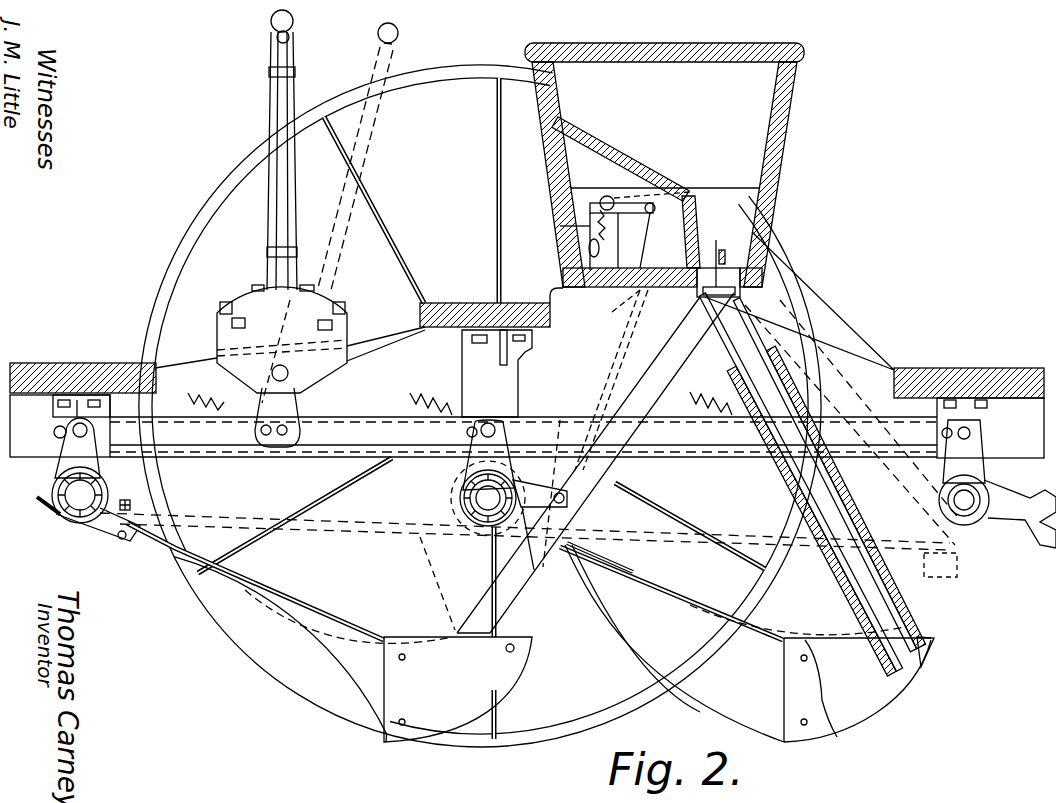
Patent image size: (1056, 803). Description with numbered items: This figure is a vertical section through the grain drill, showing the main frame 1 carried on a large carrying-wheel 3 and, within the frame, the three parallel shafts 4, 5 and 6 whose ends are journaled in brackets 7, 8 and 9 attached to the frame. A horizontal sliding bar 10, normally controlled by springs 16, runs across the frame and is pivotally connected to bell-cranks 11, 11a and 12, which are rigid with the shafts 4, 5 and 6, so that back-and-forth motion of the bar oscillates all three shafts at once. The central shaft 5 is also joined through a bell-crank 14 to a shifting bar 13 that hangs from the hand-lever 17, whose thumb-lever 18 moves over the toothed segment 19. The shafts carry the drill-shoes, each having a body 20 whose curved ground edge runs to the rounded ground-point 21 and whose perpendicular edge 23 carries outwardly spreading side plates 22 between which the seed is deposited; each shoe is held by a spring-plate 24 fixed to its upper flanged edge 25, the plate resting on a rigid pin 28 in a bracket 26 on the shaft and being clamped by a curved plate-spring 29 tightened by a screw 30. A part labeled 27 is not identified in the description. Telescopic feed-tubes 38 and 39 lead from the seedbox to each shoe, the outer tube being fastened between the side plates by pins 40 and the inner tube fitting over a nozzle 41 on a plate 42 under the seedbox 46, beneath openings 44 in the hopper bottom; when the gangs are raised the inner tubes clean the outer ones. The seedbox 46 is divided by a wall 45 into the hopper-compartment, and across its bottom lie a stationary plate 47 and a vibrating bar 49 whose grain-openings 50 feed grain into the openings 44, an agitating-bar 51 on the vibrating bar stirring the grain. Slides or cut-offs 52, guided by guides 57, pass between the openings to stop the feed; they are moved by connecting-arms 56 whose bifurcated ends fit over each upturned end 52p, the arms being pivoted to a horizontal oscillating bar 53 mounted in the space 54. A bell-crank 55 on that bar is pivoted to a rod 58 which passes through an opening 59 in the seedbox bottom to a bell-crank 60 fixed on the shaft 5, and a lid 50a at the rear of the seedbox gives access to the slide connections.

The main frame 1 is at (75, 358).
The carrying-wheel 3 is at (478, 84).
The shaft 4 is at (100, 490).
The central shaft 5 is at (478, 517).
The shaft 6 is at (986, 490).
The bracket 7 is at (58, 413).
The bracket 8 is at (497, 373).
The bracket 9 is at (985, 418).
The horizontal sliding bar 10 is at (523, 437).
The bell-crank 11 is at (68, 465).
The bell-crank 11a is at (480, 458).
The bell-crank 12 is at (982, 440).
The shifting bar 13 is at (302, 417).
The bell-crank 14 is at (505, 428).
The spring 16 is at (460, 392).
The hand-lever 17 is at (270, 117).
The thumb-lever 18 is at (286, 56).
The toothed segment 19 is at (282, 344).
The drill-shoe body 20 is at (552, 643).
The ground-point 21 is at (384, 744).
The side plate 22 is at (657, 689).
The perpendicular edge 23 is at (384, 706).
The spring-plate 24 is at (170, 556).
The upper flanged edge 25 is at (266, 588).
The bracket 26 is at (118, 524).
The link 27 is at (536, 552).
The rigid pin 28 is at (125, 545).
The curved plate-spring 29 is at (150, 530).
The screw 30 is at (130, 500).
The telescopic feed-tube 38 is at (628, 374).
The telescopic feed-tube 39 is at (667, 356).
The pin 40 is at (513, 645).
The nozzle 41 is at (748, 300).
The plate 42 is at (695, 298).
The opening 44 is at (742, 283).
The wall 45 is at (700, 160).
The seedbox 46 is at (770, 200).
The stationary bar or plate 47 is at (716, 262).
The vibrating plate or bar 49 is at (786, 258).
The grain-opening 50 is at (778, 232).
The lid 50a is at (560, 226).
The agitating-bar 51 is at (727, 240).
The slide or cut-off 52 is at (660, 268).
The upturned end 52p is at (556, 290).
The horizontal oscillating bar 53 is at (606, 197).
The space 54 is at (588, 167).
The bell-crank 55 is at (705, 189).
The connecting-arm 56 is at (588, 245).
The guide 57 is at (650, 250).
The rod 58 is at (612, 312).
The opening 59 is at (640, 292).
The bell-crank 60 is at (568, 499).